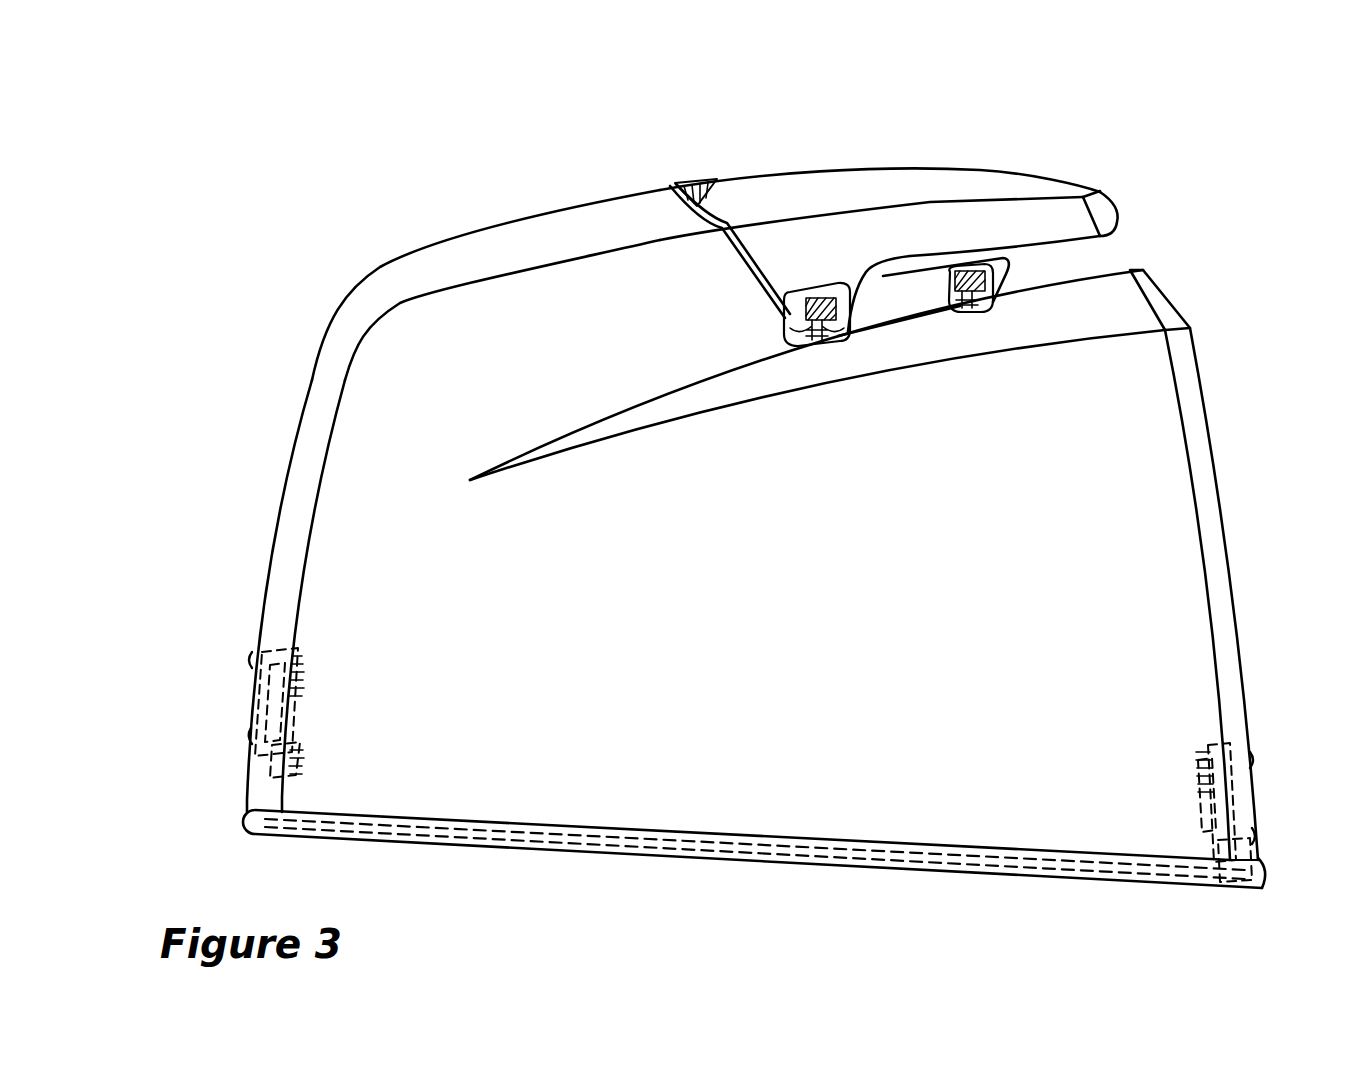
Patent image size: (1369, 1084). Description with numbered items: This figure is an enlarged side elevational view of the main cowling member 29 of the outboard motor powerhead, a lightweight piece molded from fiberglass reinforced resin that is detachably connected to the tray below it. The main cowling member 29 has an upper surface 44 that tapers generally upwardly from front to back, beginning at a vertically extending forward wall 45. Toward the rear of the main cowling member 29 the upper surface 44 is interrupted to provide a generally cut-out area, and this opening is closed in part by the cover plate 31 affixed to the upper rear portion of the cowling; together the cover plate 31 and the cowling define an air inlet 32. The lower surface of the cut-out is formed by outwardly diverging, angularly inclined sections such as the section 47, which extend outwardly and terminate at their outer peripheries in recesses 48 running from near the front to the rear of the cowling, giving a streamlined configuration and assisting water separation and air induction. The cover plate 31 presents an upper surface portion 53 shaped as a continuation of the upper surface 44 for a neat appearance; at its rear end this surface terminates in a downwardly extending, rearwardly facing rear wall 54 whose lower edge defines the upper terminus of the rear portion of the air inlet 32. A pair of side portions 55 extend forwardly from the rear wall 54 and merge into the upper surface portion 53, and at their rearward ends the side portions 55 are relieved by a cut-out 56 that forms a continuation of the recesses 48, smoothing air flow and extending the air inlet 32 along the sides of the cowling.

The main cowling member 29 is at (1217, 556).
The cover plate 31 is at (949, 206).
The air inlet 32 is at (1117, 250).
The upper surface 44 is at (542, 213).
The forward wall 45 is at (292, 467).
The angularly inclined section 47 is at (1027, 277).
The recesses 48 is at (817, 375).
The upper surface portion 53 is at (982, 170).
The rear wall 54 is at (1105, 205).
The side portions 55 is at (770, 258).
The cut-out 56 is at (930, 297).